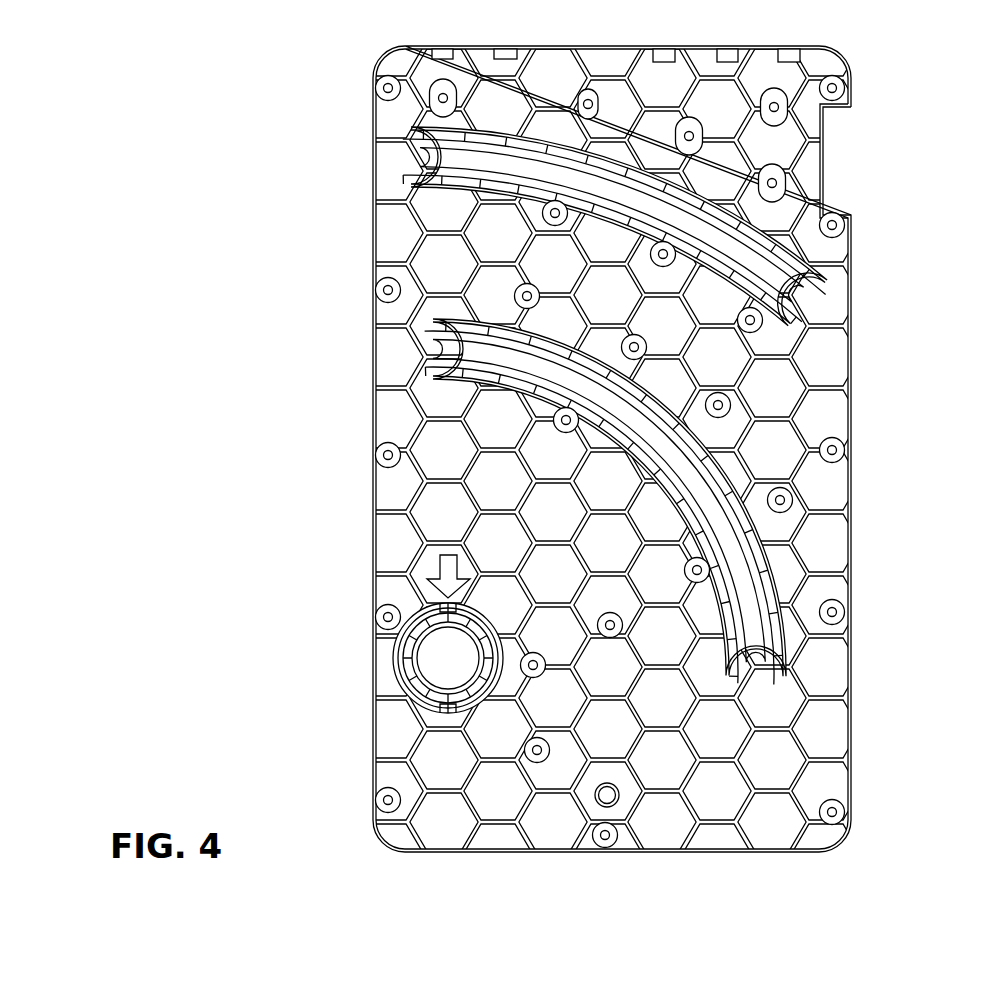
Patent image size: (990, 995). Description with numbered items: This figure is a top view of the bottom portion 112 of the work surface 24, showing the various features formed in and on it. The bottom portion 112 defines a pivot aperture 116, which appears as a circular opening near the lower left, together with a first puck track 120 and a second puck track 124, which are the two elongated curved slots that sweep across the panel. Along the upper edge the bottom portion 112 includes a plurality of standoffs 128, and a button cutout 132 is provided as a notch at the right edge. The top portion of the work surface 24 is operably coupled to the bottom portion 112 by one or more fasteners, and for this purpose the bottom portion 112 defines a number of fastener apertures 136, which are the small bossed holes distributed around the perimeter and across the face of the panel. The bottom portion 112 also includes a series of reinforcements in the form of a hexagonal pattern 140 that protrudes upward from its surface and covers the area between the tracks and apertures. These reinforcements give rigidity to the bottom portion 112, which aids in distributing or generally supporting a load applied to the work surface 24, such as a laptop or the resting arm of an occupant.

The work surface 24 is at (259, 207).
The bottom portion 112 is at (852, 752).
The pivot aperture 116 is at (440, 659).
The first puck track 120 is at (440, 158).
The second puck track 124 is at (440, 350).
The standoffs 128 is at (504, 50).
The button cutout 132 is at (843, 164).
The fastener apertures 136 is at (438, 100).
The hexagonal pattern 140 is at (660, 797).